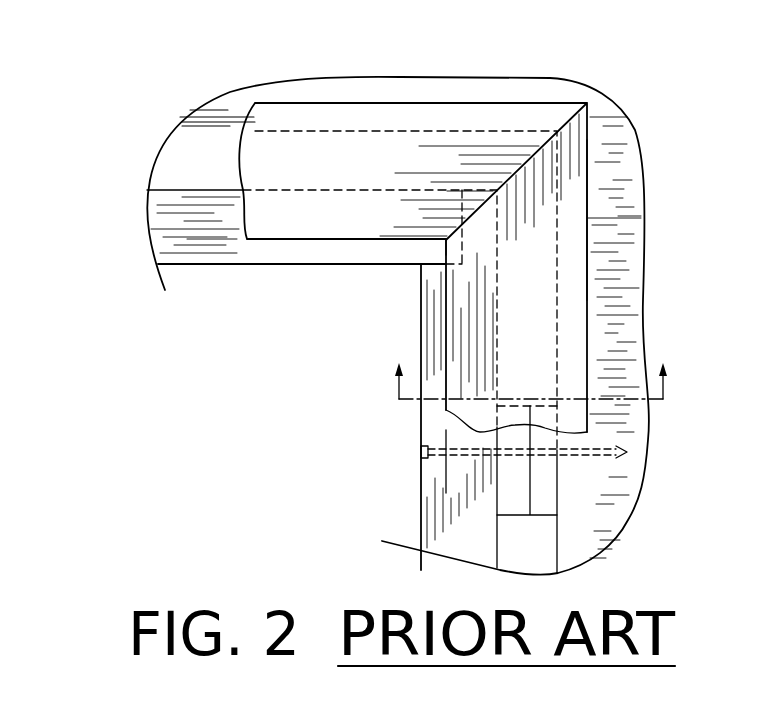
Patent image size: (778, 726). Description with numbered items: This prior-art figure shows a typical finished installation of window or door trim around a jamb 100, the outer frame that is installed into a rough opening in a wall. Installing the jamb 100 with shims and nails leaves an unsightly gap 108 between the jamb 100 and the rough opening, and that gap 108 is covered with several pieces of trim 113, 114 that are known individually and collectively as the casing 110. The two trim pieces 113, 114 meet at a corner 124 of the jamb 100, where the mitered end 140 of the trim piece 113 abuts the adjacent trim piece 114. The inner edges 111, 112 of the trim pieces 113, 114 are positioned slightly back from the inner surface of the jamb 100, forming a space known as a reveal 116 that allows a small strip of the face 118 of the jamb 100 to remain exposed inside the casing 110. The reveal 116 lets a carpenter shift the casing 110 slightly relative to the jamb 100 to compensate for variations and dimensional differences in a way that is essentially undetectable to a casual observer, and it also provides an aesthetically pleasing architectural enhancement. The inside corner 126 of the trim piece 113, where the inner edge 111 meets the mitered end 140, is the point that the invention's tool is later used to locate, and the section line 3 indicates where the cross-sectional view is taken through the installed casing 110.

The jamb 100 is at (150, 208).
The gap 108 is at (198, 115).
The casing 110 is at (580, 162).
The inner edge 111 is at (292, 240).
The inner edge 112 is at (446, 410).
The trim piece 113 is at (475, 118).
The trim piece 114 is at (573, 227).
The reveal 116 is at (206, 230).
The face of the jamb 118 is at (160, 247).
The corner of the jamb 124 is at (421, 265).
The inside corner of the trim piece 126 is at (425, 247).
The mitered end 140 is at (540, 160).
The section line 3- 3 is at (531, 364).